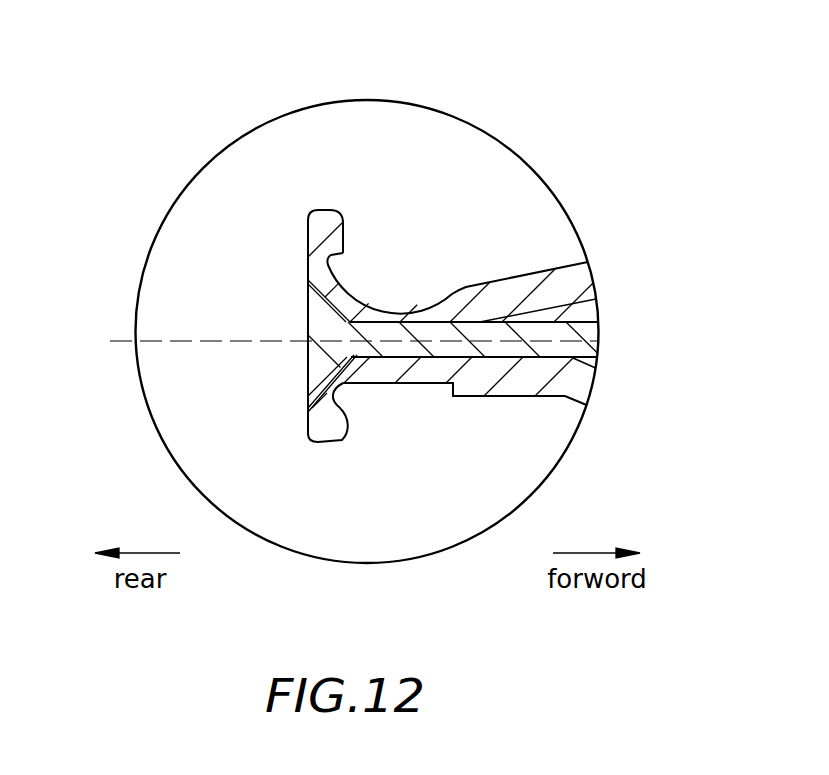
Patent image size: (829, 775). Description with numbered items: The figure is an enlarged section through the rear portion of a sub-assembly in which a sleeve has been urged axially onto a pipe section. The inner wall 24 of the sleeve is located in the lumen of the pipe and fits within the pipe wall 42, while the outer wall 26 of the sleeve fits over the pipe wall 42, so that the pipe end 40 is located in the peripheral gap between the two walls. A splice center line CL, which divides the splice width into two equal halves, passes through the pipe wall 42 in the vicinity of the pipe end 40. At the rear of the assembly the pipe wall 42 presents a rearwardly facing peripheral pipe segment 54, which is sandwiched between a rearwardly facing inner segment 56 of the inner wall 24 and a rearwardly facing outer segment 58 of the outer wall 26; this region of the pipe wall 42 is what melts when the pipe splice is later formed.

The inner wall 24 is at (398, 383).
The outer wall 26 is at (398, 307).
The pipe end 40 is at (307, 322).
The pipe wall 42 is at (549, 344).
The peripheral pipe segment 54 is at (305, 344).
The inner segment 56 is at (306, 424).
The outer segment 58 is at (307, 253).
The splice center line CL is at (118, 342).